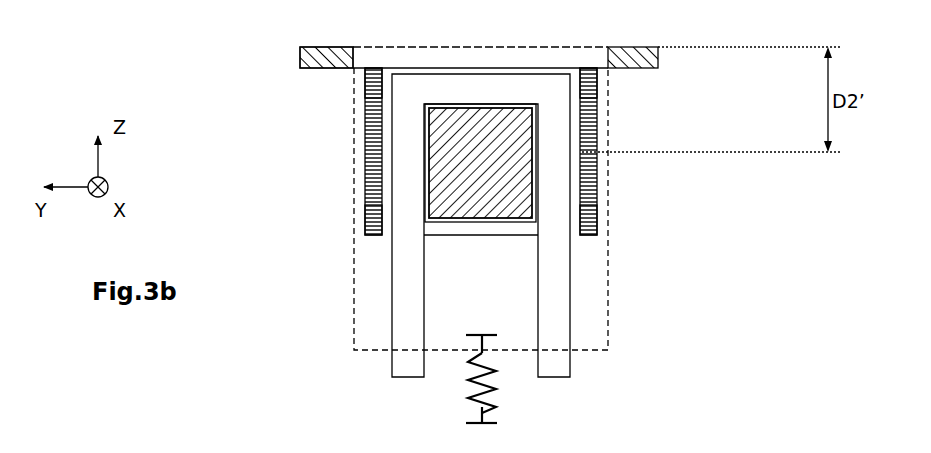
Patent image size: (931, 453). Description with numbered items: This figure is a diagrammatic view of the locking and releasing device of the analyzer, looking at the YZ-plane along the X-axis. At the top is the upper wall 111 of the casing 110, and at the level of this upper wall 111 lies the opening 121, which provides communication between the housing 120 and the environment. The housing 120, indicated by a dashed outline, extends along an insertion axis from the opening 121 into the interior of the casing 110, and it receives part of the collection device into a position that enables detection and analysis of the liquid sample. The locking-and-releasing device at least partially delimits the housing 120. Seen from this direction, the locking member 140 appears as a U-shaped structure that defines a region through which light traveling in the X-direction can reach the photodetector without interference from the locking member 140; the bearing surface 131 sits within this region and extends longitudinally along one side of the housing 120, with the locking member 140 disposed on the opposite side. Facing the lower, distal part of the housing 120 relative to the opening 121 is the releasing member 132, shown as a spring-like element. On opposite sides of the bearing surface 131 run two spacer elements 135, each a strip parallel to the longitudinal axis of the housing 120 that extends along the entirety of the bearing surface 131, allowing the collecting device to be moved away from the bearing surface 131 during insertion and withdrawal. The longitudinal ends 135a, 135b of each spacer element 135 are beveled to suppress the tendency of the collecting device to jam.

The casing 110 is at (298, 58).
The upper wall 111 is at (330, 47).
The opening 121 is at (434, 45).
The housing 120 is at (616, 314).
The bearing surface 131 is at (486, 229).
The releasing member 132 is at (493, 391).
The spacer element 135 is at (365, 152).
The longitudinal end of spacer element 135a is at (364, 69).
The longitudinal end of spacer element 135b is at (364, 230).
The locking member 140 is at (390, 312).